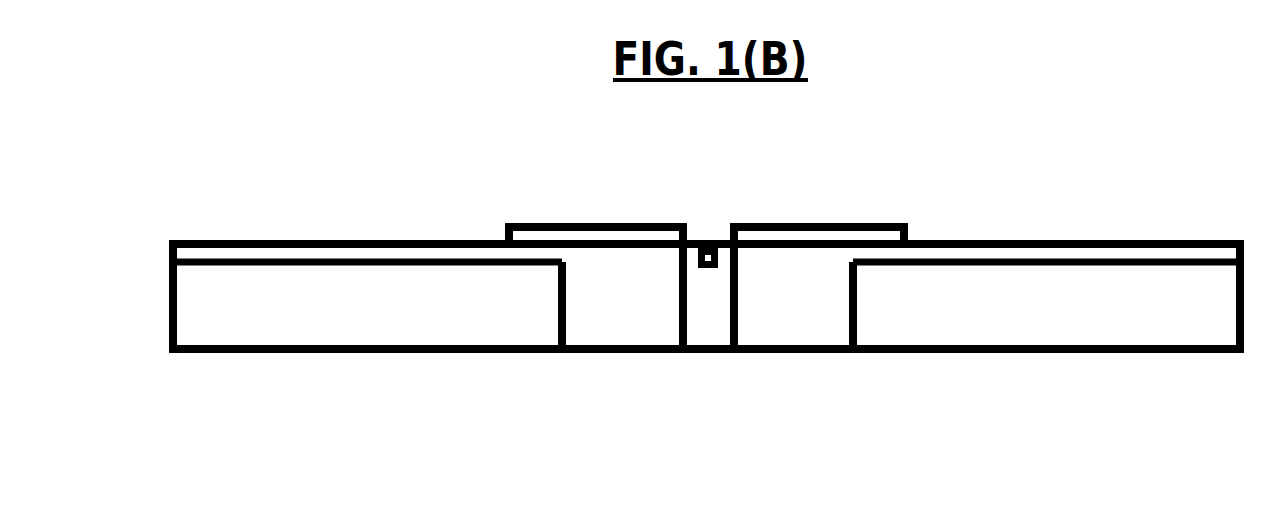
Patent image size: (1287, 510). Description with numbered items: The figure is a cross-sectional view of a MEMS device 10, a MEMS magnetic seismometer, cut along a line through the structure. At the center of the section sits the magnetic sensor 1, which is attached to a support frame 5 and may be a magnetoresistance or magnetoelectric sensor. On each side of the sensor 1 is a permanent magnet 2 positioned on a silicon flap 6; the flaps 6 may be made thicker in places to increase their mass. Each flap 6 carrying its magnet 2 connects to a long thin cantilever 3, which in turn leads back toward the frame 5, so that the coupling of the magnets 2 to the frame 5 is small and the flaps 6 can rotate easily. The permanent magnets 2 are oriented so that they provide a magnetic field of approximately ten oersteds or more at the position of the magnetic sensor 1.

The MEMS device 10 is at (988, 190).
The magnetic sensor 1 is at (707, 246).
The permanent magnet 2 is at (603, 229).
The long thin cantilever 3 is at (318, 251).
The support frame 5 is at (338, 322).
The silicon flap 6 is at (588, 325).